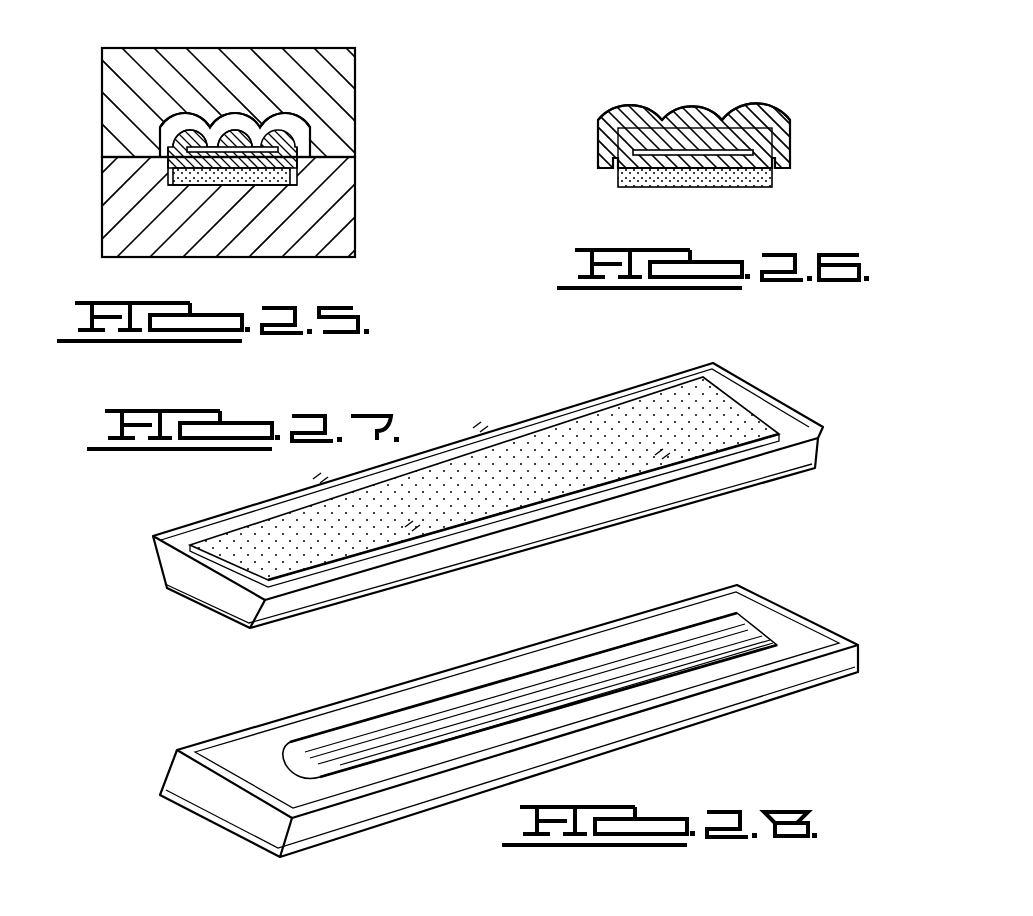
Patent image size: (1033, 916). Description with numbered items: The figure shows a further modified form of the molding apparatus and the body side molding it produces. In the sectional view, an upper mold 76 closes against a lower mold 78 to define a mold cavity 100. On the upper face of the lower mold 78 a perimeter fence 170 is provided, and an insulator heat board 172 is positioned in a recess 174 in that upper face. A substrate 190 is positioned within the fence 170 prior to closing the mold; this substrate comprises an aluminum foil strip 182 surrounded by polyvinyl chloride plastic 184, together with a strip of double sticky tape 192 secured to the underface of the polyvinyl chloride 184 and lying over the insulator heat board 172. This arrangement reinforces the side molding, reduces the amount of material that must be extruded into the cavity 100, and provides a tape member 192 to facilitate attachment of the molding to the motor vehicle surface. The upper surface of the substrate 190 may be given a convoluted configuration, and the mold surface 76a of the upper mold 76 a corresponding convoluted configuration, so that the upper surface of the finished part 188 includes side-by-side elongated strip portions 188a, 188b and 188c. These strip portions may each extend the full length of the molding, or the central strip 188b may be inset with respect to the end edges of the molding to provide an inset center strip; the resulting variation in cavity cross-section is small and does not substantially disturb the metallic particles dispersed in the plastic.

In FIG. 25, the upper mold 76 is at (102, 85).
In FIG. 25, the lower mold 78 is at (102, 229).
In FIG. 25, the mold surface 76a is at (290, 120).
In FIG. 25, the mold cavity 100 is at (240, 115).
In FIG. 25, the polyvinyl chloride plastic 184 is at (187, 130).
In FIG. 25, the aluminum foil strip 182 is at (216, 146).
In FIG. 25, the substrate 190 is at (260, 118).
In FIG. 26, the substrate 190 is at (775, 170).
In FIG. 25, the perimeter fence 170 is at (170, 148).
In FIG. 25, the double sticky tape strip 192 is at (292, 170).
In FIG. 26, the double sticky tape strip 192 is at (706, 187).
In FIG. 27, the double sticky tape strip 192 is at (650, 392).
In FIG. 25, the recess 174 is at (290, 181).
In FIG. 25, the insulator heat board 172 is at (250, 181).
In FIG. 26, the finished part 188 is at (780, 97).
In FIG. 27, the finished part 188 is at (590, 528).
In FIG. 28, the finished part 188 is at (210, 855).
In FIG. 26, the strip portion 188a is at (628, 107).
In FIG. 28, the strip portion 188a is at (360, 697).
In FIG. 26, the central strip portion 188b is at (703, 118).
In FIG. 28, the central strip portion 188b is at (568, 665).
In FIG. 26, the strip portion 188c is at (768, 108).
In FIG. 28, the strip portion 188c is at (732, 663).